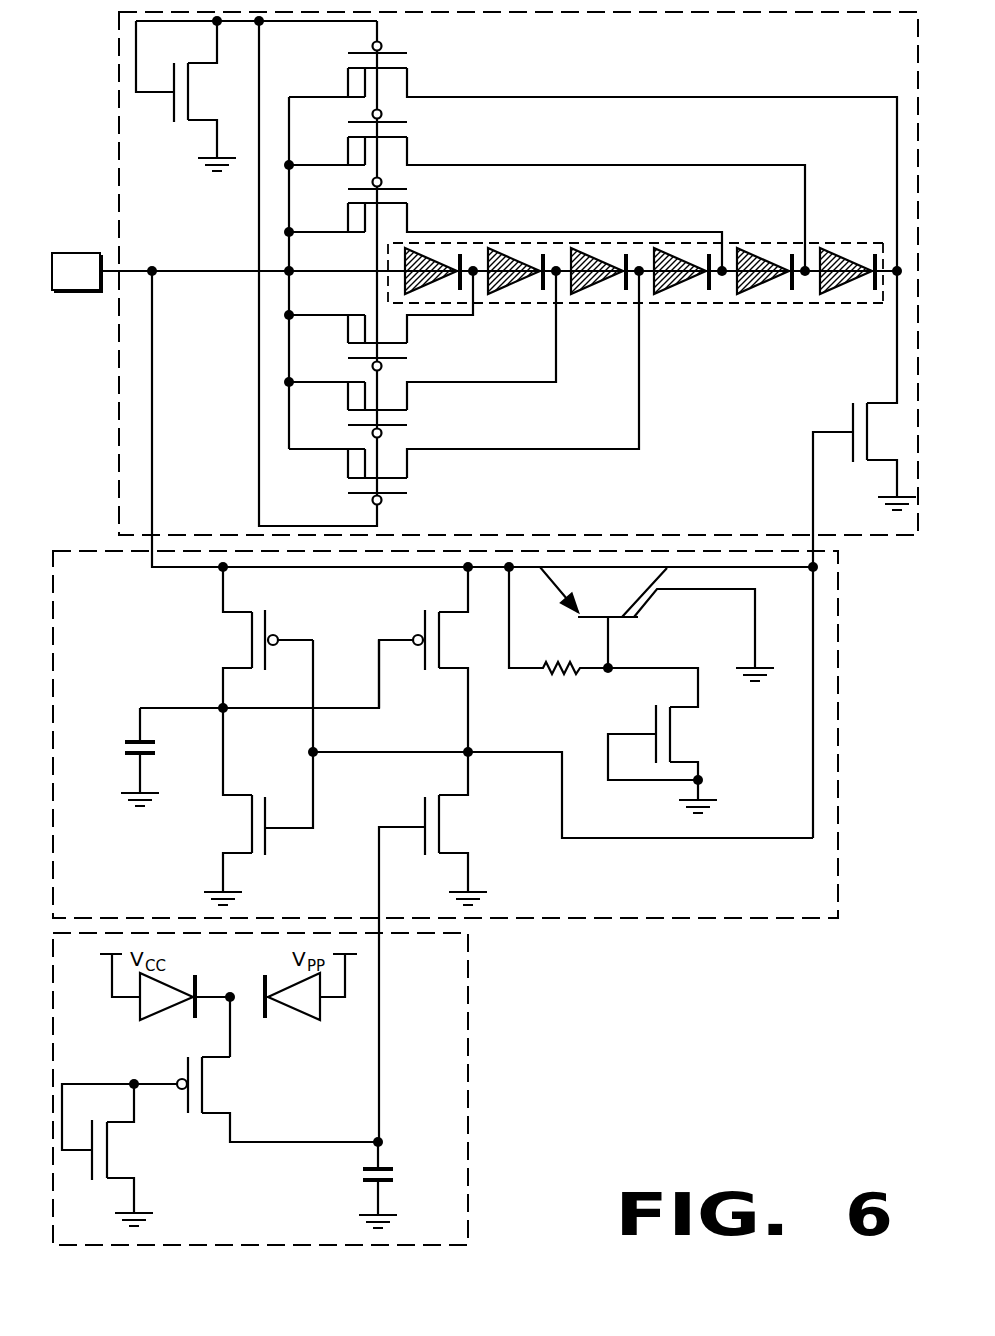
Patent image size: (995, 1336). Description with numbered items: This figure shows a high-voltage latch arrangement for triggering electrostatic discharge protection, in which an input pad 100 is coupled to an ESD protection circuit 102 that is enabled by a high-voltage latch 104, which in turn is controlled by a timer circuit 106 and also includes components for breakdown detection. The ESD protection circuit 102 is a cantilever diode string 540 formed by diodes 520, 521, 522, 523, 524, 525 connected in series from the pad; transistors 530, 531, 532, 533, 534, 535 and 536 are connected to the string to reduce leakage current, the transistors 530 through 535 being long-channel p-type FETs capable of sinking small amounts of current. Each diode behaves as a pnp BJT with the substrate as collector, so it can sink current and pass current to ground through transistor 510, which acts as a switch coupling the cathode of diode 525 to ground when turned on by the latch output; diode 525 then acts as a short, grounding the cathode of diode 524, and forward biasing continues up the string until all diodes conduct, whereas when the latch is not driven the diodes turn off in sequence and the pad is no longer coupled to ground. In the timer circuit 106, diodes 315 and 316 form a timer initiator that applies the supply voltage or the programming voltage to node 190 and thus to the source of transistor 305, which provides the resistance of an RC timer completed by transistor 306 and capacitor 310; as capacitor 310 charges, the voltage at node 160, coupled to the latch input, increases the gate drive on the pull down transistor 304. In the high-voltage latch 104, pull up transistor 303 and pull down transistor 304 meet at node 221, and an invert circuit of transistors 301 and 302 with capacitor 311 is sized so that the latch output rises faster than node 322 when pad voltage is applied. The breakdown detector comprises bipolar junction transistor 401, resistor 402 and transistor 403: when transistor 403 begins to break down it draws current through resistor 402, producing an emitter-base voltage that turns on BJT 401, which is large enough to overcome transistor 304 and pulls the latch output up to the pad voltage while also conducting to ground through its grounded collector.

The input pad 100 is at (71, 253).
The ESD protection circuit 102 is at (905, 40).
The high-voltage latch 104 is at (829, 909).
The timer circuit 106 is at (464, 1243).
The transistor 536 is at (229, 104).
The long-channel p-type FET transistor 535 is at (409, 95).
The long-channel p-type FET transistor 534 is at (409, 163).
The long-channel p-type FET transistor 533 is at (409, 230).
The long-channel p-type FET transistor 530 is at (409, 317).
The long-channel p-type FET transistor 531 is at (409, 384).
The long-channel p-type FET transistor 532 is at (409, 451).
The diode 520 is at (403, 267).
The diode 521 is at (506, 295).
The diode 522 is at (589, 295).
The diode 523 is at (672, 295).
The diode 524 is at (755, 295).
The diode 525 is at (838, 295).
The cantilever diode string 540 is at (836, 243).
The transistor 510 is at (905, 441).
The transistor 301 is at (234, 656).
The transistor 302 is at (234, 839).
The pull up transistor 303 is at (484, 656).
The pull down transistor 304 is at (484, 838).
The capacitor 311 is at (128, 757).
The node 322 is at (220, 712).
The output node 221 is at (471, 752).
The bipolar junction transistor 401 is at (624, 608).
The resistor 402 is at (575, 699).
The transistor 403 is at (710, 744).
The node 190 is at (236, 985).
The diode 315 is at (150, 1008).
The diode 316 is at (307, 1008).
The transistor 305 is at (244, 1101).
The transistor 306 is at (147, 1161).
The node 160 is at (384, 1138).
The capacitor 310 is at (394, 1166).